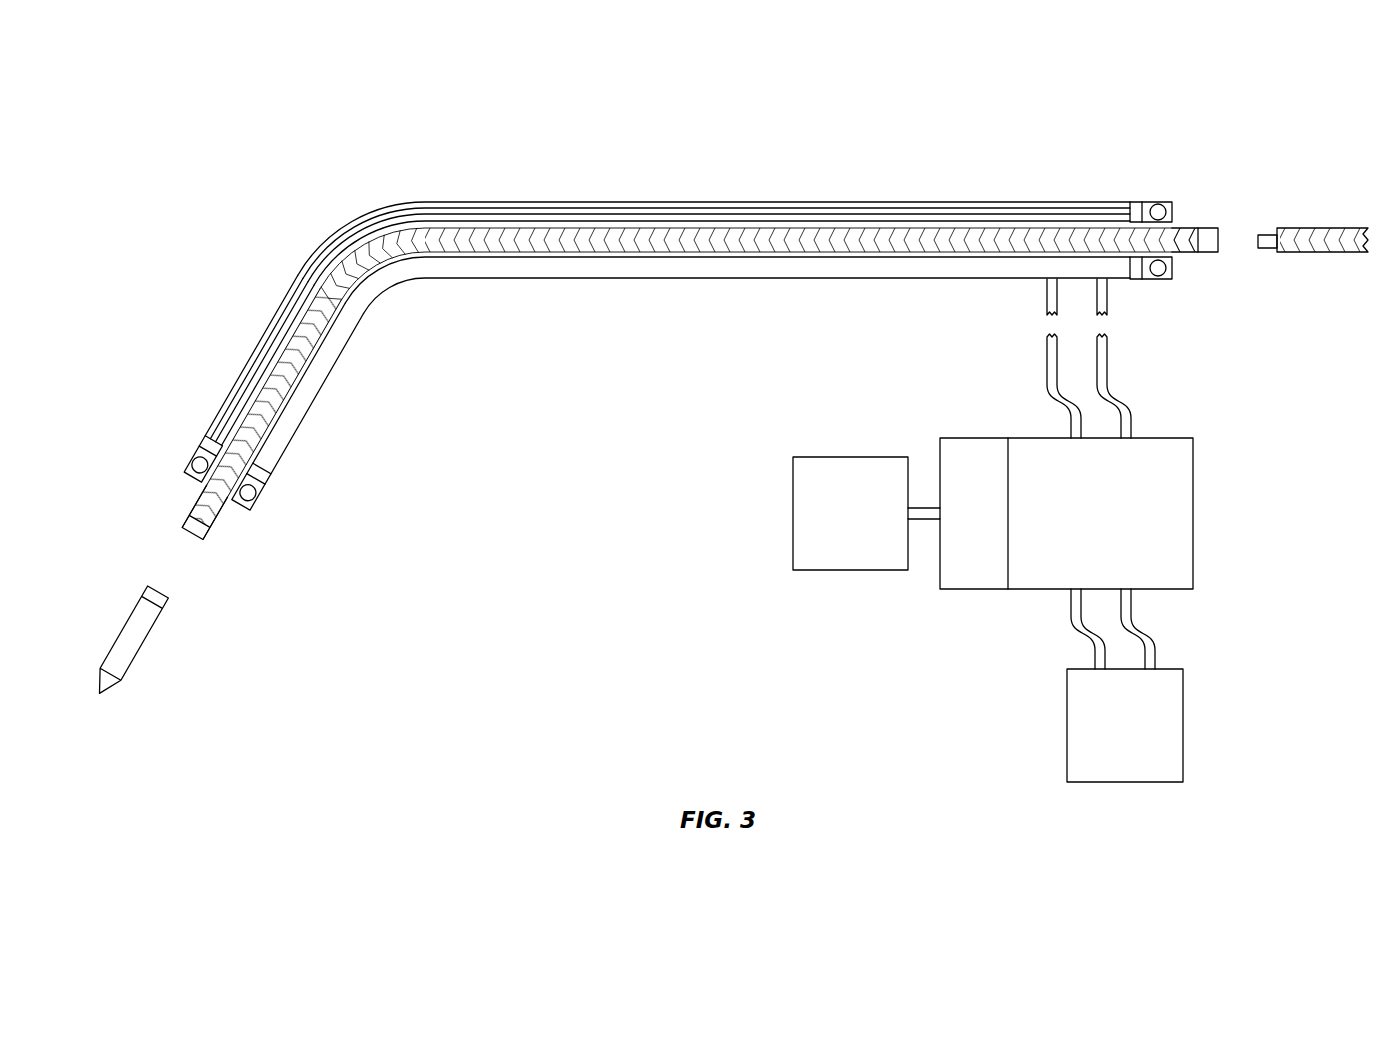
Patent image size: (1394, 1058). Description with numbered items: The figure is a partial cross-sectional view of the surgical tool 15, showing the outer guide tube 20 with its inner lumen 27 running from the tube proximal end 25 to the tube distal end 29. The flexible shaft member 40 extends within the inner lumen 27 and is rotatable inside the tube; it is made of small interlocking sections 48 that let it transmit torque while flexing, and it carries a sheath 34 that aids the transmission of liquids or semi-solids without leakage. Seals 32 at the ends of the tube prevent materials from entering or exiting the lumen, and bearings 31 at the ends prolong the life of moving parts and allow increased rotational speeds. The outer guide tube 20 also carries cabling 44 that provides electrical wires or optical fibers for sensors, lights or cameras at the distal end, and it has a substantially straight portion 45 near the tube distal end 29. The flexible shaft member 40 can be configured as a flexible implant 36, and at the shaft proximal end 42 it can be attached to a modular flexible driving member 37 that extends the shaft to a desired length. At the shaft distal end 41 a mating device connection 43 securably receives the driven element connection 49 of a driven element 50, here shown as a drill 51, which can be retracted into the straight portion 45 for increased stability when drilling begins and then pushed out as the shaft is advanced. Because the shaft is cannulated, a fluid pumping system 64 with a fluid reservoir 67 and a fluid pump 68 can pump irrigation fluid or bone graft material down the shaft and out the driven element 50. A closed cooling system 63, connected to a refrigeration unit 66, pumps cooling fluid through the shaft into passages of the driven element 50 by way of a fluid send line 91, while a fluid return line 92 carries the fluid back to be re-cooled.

The surgical tool 15 is at (350, 188).
The outer guide tube 20 is at (805, 201).
The tube proximal end 25 is at (1174, 211).
The inner lumen 27 is at (666, 258).
The tube distal end 29 is at (215, 425).
The bearings 31 is at (1158, 205).
The seals 32 is at (1135, 205).
The sheath 34 is at (749, 262).
The flexible implant 36 is at (1182, 229).
The flexible driving member 37 is at (1323, 228).
The flexible shaft member 40 is at (600, 240).
The shaft distal end 41 is at (192, 522).
The shaft proximal end 42 is at (1212, 242).
The mating device connection 43 is at (205, 538).
The cabling 44 is at (652, 206).
The straight portion 45 is at (256, 347).
The interlocking sections 48 is at (333, 279).
The driven element connection 49 is at (152, 589).
The driven element 50 is at (150, 650).
The drill 51 is at (119, 627).
The closed cooling system 63 is at (1178, 518).
The fluid pumping system 64 is at (888, 618).
The refrigeration unit 66 is at (1168, 728).
The fluid reservoir 67 is at (807, 515).
The fluid pump 68 is at (973, 450).
The fluid send line 91 is at (1046, 297).
The fluid return line 92 is at (1108, 297).